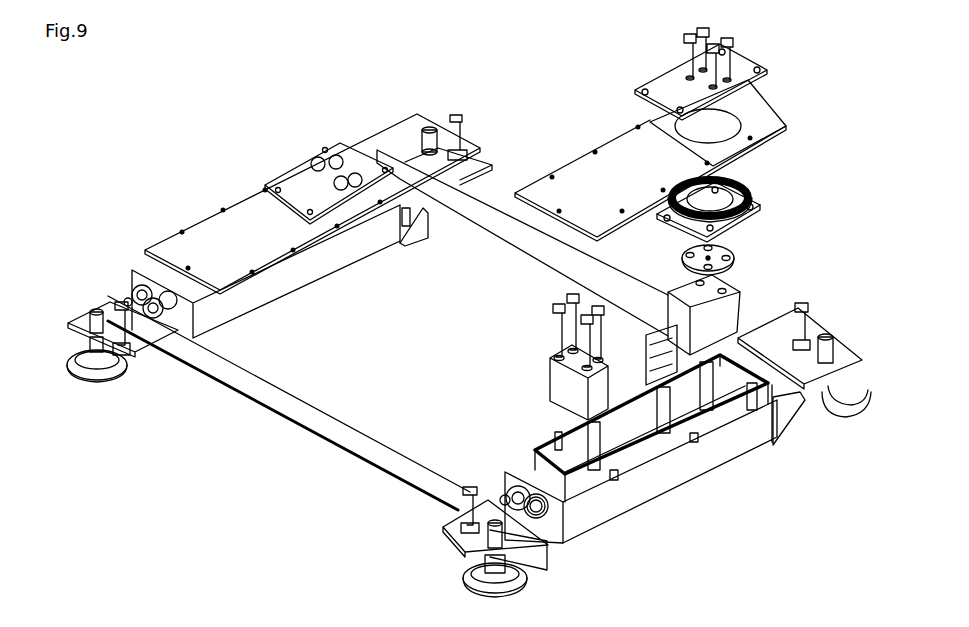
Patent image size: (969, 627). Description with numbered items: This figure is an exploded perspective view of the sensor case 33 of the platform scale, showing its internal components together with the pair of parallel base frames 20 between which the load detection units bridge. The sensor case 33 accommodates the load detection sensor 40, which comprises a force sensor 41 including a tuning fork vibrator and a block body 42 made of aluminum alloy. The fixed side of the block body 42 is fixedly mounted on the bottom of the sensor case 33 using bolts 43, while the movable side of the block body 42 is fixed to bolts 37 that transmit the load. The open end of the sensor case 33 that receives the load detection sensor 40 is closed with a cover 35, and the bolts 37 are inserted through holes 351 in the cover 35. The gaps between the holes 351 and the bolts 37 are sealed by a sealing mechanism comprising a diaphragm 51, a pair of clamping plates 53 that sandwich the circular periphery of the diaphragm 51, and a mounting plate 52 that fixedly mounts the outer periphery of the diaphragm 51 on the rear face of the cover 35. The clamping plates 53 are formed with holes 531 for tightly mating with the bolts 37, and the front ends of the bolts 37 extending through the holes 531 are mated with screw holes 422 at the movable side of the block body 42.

The base frame 20 is at (464, 251).
The sensor case 33 is at (308, 286).
The cover 35 is at (202, 217).
The holes 351 is at (734, 124).
The bolts 37 is at (688, 50).
The load detection sensor 40 is at (755, 315).
The force sensor 41 is at (745, 318).
The block body 42 is at (748, 303).
The screw holes 422 is at (723, 278).
The bolts 43 is at (557, 342).
The diaphragm 51 is at (750, 198).
The mounting plate 52 is at (758, 223).
The clamping plates 53 is at (670, 253).
The holes 531 is at (692, 246).